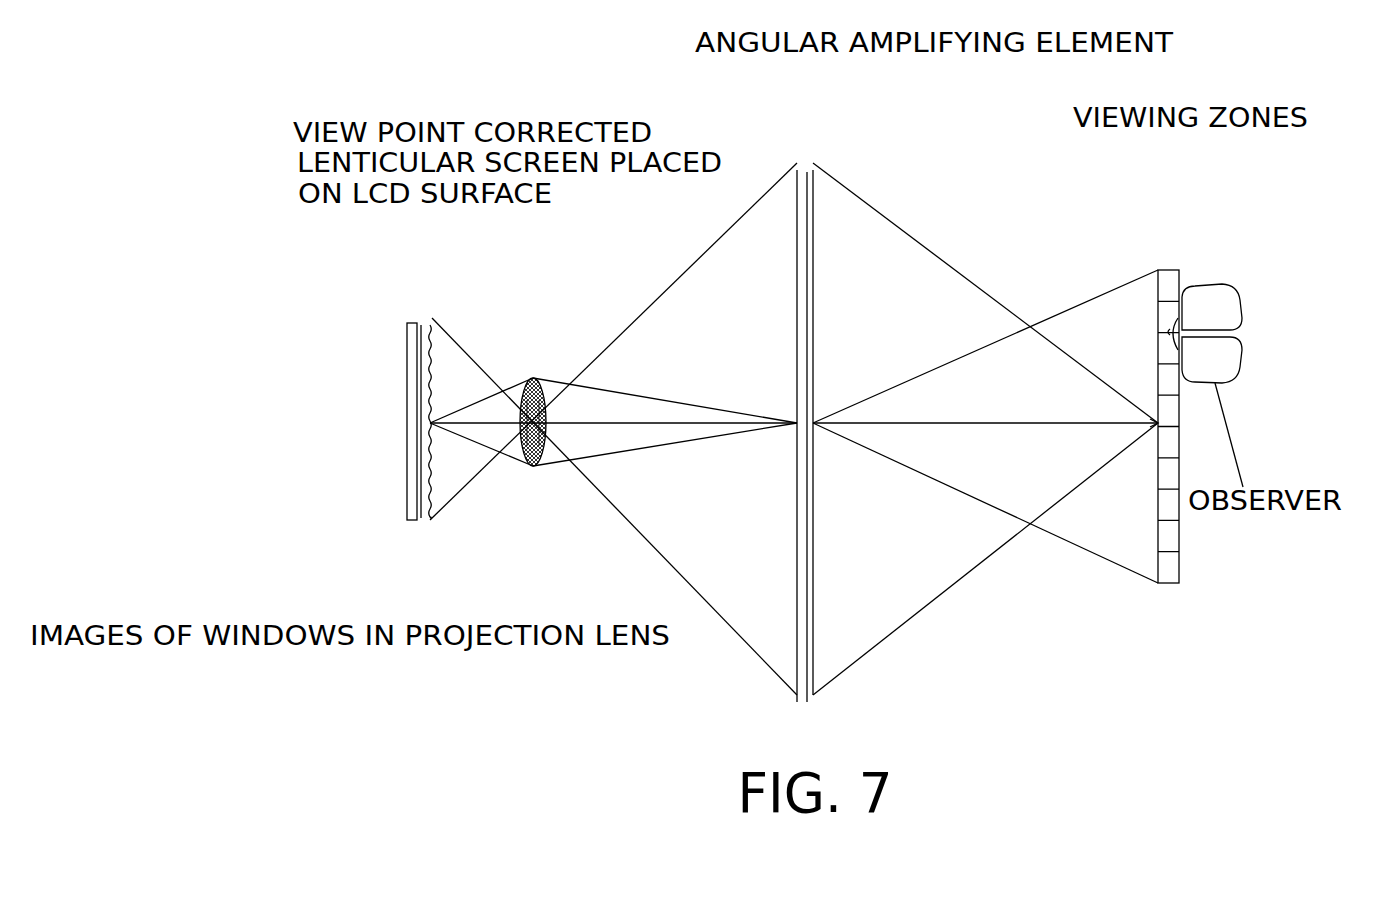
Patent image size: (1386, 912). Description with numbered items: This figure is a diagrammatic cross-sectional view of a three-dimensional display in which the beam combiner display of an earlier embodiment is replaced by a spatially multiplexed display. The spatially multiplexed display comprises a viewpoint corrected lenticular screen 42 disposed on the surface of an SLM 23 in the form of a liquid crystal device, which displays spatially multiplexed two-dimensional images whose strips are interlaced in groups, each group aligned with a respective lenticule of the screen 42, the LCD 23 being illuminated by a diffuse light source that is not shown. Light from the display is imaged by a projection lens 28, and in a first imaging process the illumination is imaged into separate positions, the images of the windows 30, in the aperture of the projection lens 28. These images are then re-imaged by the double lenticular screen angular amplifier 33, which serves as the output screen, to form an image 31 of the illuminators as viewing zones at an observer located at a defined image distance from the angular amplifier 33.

The SLM 23 is at (407, 333).
The viewpoint corrected lenticular screen 42 is at (433, 334).
The projection lens 28 is at (533, 381).
The images of the illuminators 30 is at (531, 466).
The double lenticular screen angular amplifier 33 is at (807, 172).
The image of the illuminators 31 is at (1166, 282).